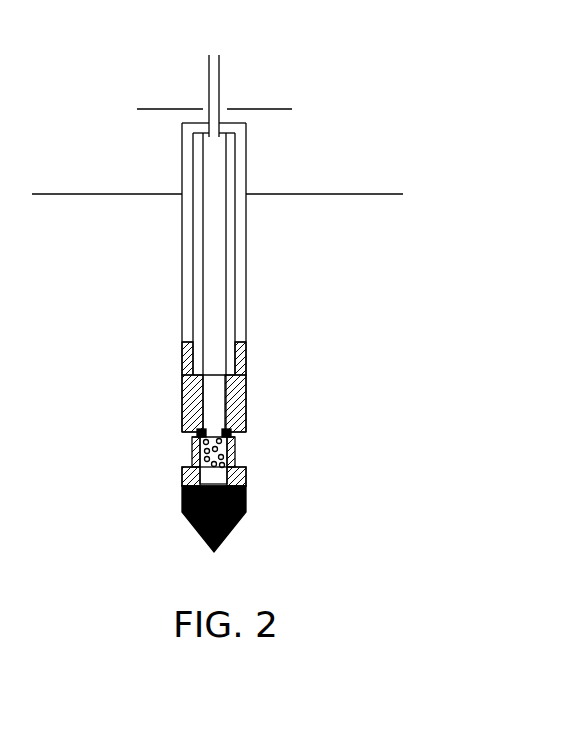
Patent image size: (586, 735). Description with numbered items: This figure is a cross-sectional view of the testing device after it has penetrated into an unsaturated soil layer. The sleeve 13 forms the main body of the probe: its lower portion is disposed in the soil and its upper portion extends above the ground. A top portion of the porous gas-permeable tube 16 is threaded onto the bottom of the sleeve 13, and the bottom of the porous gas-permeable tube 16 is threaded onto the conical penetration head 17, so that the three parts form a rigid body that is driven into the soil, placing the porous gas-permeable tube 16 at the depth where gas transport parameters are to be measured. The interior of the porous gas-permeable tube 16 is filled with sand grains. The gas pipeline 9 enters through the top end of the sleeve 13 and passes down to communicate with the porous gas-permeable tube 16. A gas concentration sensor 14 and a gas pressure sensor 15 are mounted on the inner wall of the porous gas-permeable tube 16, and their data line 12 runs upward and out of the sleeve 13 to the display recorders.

The gas pipeline 9 is at (271, 83).
The data line 12 is at (287, 134).
The sleeve 13 is at (266, 277).
The gas concentration sensor 14 is at (146, 407).
The gas pressure sensor 15 is at (287, 407).
The porous gas-permeable tube 16 is at (160, 458).
The conical penetration head 17 is at (267, 509).